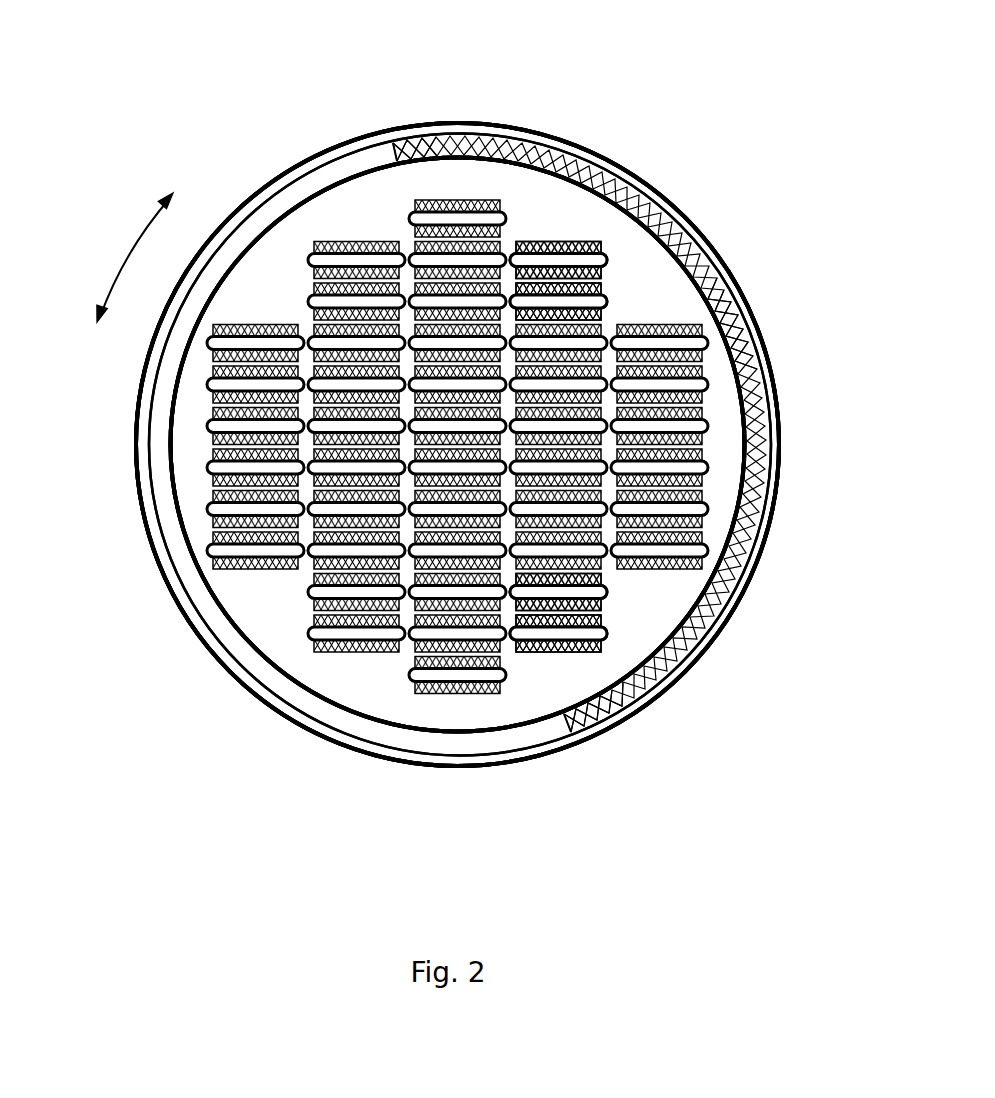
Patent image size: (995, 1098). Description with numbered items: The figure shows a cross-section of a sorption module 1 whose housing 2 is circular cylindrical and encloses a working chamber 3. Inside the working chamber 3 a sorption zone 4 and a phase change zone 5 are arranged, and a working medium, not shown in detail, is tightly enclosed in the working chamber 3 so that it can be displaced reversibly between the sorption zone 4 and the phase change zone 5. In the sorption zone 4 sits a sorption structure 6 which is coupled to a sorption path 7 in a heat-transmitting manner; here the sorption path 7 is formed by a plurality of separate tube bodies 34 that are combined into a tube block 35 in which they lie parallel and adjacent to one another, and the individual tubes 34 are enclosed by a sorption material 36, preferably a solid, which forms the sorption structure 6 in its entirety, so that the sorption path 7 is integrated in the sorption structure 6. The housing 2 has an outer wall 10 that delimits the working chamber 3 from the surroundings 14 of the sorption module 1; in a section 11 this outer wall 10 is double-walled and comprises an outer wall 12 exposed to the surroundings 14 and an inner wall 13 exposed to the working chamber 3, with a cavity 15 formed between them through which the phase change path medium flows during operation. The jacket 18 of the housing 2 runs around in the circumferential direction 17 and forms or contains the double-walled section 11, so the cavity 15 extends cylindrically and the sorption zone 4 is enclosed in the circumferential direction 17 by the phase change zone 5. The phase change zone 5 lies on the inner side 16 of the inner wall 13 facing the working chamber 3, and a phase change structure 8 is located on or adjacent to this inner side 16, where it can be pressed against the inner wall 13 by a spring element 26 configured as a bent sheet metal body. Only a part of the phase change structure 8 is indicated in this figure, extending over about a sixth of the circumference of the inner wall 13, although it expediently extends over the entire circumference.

The sorption module 1 is at (808, 152).
The housing 2 is at (570, 132).
The working chamber 3 is at (675, 300).
The sorption zone 4 is at (690, 590).
The phase change zone 5 is at (740, 284).
The sorption structure 6 is at (614, 246).
The sorption path 7 is at (313, 633).
The phase change structure 8 is at (760, 338).
The outer wall 10 is at (384, 120).
The section 11 is at (206, 186).
The outer wall 12 is at (293, 167).
The inner wall 13 is at (318, 172).
The surroundings 14 is at (50, 443).
The cavity 15 is at (350, 150).
The inner side 16 is at (313, 168).
The circumferential direction 17 is at (128, 252).
The jacket 18 is at (253, 178).
The spring element 26 is at (603, 725).
The tube bodies 34 is at (607, 298).
The tube block 35 is at (628, 635).
The sorption material 36 is at (603, 613).